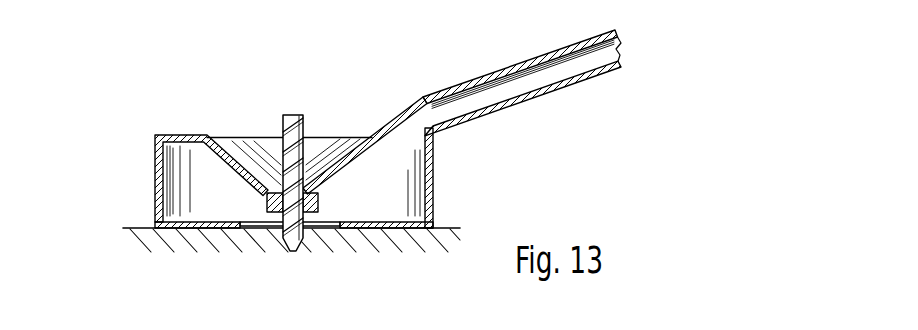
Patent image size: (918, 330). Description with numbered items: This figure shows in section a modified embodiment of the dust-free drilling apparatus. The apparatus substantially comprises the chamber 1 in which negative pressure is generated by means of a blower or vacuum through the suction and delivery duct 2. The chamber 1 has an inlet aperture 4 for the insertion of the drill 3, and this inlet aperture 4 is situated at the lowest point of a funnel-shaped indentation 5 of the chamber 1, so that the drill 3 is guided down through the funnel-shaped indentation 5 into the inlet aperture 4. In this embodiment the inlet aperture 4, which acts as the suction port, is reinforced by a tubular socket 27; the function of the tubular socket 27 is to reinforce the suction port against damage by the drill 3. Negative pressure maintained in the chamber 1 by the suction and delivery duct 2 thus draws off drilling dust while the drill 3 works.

The chamber 1 is at (405, 161).
The suction and delivery duct 2 is at (536, 82).
The drill 3 is at (300, 117).
The inlet aperture 4 is at (281, 191).
The funnel-shaped indentation 5 is at (229, 153).
The tubular socket 27 is at (317, 226).